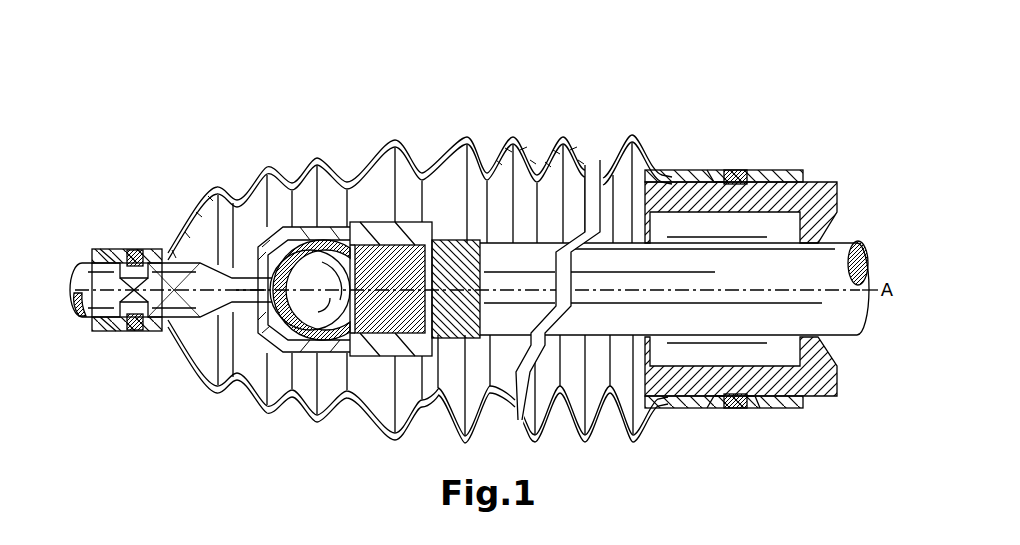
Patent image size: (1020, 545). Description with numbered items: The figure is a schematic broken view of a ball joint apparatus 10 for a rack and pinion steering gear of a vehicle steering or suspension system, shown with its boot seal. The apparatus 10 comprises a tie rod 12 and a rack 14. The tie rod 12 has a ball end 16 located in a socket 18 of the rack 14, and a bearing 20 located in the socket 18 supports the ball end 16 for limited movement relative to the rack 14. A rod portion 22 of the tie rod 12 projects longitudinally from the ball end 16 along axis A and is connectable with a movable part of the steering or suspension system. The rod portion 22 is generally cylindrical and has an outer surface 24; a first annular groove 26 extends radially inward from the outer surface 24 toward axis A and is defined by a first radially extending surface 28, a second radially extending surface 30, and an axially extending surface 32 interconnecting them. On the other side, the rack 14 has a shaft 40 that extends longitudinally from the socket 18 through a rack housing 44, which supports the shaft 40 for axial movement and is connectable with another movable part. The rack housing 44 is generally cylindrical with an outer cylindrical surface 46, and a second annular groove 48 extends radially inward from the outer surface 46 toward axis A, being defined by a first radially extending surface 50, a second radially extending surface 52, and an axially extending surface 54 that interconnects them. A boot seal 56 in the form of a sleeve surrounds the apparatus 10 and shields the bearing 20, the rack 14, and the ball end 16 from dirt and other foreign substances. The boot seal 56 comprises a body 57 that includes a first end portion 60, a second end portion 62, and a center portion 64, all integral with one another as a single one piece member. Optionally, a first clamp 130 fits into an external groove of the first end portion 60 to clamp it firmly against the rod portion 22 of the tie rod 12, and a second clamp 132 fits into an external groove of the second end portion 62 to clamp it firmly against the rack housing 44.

The ball joint apparatus 10 is at (494, 75).
The tie rod 12 is at (202, 378).
The rack 14 is at (404, 236).
The ball end 16 is at (298, 307).
The socket 18 is at (300, 247).
The bearing 20 is at (332, 345).
The rod portion 22 is at (174, 246).
The outer surface 24 is at (98, 252).
The first annular groove 26 is at (125, 297).
The first radially extending surface 28 is at (130, 318).
The second radially extending surface 30 is at (193, 307).
The axially extending surface 32 is at (145, 331).
The shaft 40 is at (618, 260).
The rack housing 44 is at (784, 182).
The outer cylindrical surface 46 is at (788, 407).
The second annular groove 48 is at (738, 182).
The first radially extending surface 50 is at (718, 408).
The second radially extending surface 52 is at (750, 409).
The axially extending surface 54 is at (737, 409).
The boot seal 56 is at (573, 133).
The body 57 is at (397, 145).
The first end portion 60 is at (118, 212).
The second end portion 62 is at (754, 136).
The center portion 64 is at (528, 135).
The first clamp 130 is at (136, 251).
The second clamp 132 is at (737, 170).